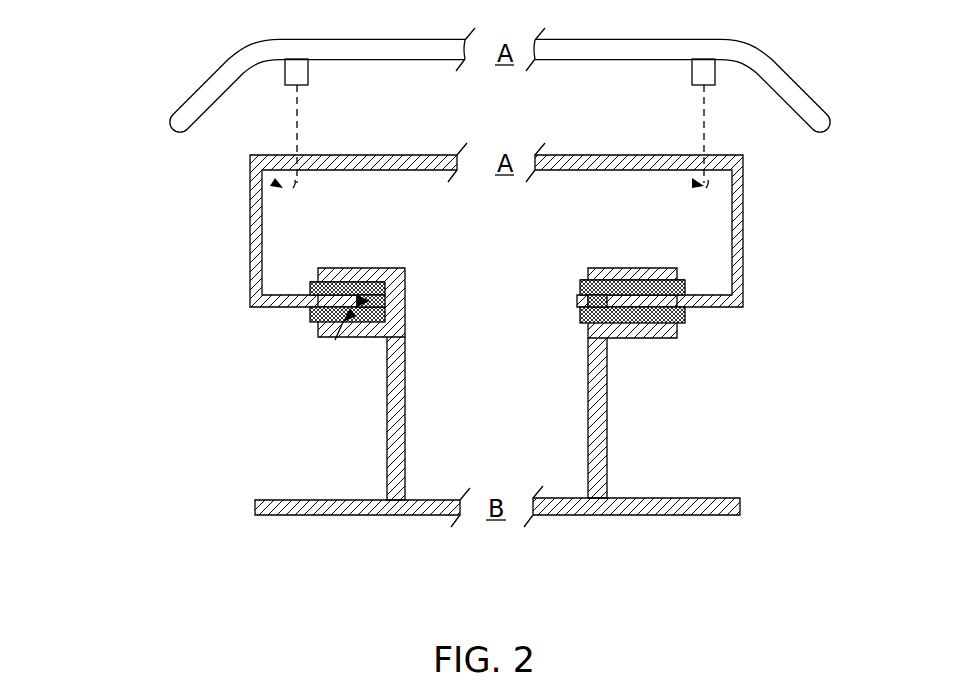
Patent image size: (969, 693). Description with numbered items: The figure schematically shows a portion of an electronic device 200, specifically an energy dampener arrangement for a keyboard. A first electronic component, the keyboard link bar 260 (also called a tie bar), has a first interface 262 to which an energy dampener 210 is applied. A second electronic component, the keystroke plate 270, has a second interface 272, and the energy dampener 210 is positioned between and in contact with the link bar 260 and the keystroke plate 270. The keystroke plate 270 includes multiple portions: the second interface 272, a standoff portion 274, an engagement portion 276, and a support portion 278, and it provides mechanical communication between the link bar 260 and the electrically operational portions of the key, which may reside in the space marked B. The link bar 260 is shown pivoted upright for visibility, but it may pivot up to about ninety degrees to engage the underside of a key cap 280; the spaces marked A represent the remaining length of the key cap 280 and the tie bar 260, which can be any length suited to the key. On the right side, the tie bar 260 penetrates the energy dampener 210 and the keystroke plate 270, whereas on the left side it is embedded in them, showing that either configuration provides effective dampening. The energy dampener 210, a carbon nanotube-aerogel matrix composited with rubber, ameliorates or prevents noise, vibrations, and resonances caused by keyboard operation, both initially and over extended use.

The electronic device 200 is at (225, 43).
The key cap 280 is at (600, 50).
The keyboard link bar 260 is at (246, 231).
The keystroke plate 270 is at (413, 302).
The second interface 272 is at (372, 282).
The standoff portion 274 is at (387, 445).
The engagement portion 276 is at (342, 271).
The support portion 278 is at (335, 508).
The energy dampener 210 is at (309, 315).
The first interface 262 is at (335, 340).